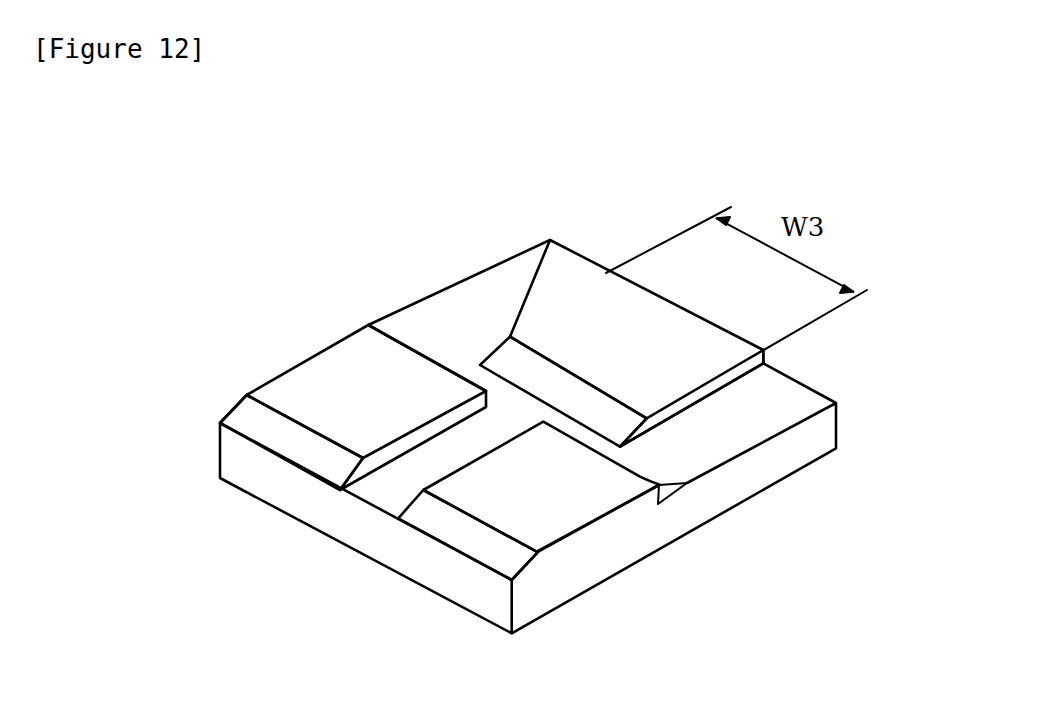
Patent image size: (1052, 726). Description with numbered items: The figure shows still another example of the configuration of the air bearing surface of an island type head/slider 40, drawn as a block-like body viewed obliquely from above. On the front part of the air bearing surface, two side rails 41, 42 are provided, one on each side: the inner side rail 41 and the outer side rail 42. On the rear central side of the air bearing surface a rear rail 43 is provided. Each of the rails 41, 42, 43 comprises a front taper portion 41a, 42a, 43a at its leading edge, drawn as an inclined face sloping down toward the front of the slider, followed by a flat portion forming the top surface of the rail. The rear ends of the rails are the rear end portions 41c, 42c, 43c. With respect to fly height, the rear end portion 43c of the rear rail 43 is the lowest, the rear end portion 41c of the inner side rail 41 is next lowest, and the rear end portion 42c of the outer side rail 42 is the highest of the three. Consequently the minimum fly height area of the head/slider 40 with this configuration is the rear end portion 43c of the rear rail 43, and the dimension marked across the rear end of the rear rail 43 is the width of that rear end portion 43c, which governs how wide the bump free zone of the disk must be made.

The head/slider 40 is at (381, 182).
The side rail 41 is at (325, 385).
The front taper portion 41a is at (253, 420).
The rear end portion 41c is at (427, 358).
The side rail 42 is at (565, 508).
The front taper portion 42a is at (467, 537).
The rear end portion 42c is at (687, 486).
The rear rail 43 is at (625, 315).
The front taper portion 43a is at (512, 363).
The rear end portion 43c is at (763, 355).